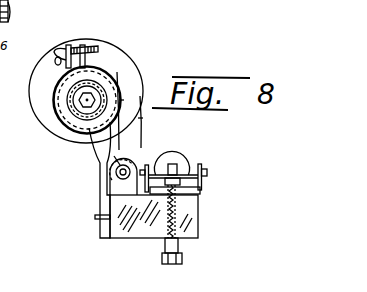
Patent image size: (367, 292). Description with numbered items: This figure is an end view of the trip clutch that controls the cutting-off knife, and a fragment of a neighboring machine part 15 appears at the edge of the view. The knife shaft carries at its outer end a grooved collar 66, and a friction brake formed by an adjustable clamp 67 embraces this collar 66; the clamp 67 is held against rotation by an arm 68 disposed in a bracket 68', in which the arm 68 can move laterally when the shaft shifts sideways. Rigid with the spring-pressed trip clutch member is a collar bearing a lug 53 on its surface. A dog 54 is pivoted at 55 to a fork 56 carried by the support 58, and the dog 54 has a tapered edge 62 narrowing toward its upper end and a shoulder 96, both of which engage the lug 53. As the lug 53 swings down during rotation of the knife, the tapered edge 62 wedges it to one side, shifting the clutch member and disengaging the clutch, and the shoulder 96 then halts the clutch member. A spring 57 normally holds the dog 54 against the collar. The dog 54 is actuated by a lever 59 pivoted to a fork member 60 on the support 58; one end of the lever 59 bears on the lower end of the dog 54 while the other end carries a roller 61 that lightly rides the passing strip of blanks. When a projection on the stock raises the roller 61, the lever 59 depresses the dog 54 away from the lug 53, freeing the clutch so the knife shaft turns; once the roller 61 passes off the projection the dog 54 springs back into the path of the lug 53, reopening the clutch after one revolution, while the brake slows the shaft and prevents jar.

The frame 15 is at (10, 14).
The grooved collar 66 is at (55, 105).
The tapered edge 62 is at (117, 72).
The adjustable clamp 67 is at (98, 50).
The lug 53 is at (124, 98).
The shoulder 96 is at (143, 119).
The arm 68 is at (85, 180).
The bracket 68' is at (84, 227).
The fork 56 is at (122, 187).
The pivot 55 is at (130, 165).
The dog 54 is at (114, 156).
The support 58 is at (128, 228).
The spring 57 is at (176, 217).
The lever 59 is at (200, 189).
The fork member 60 is at (202, 166).
The roller 61 is at (180, 157).